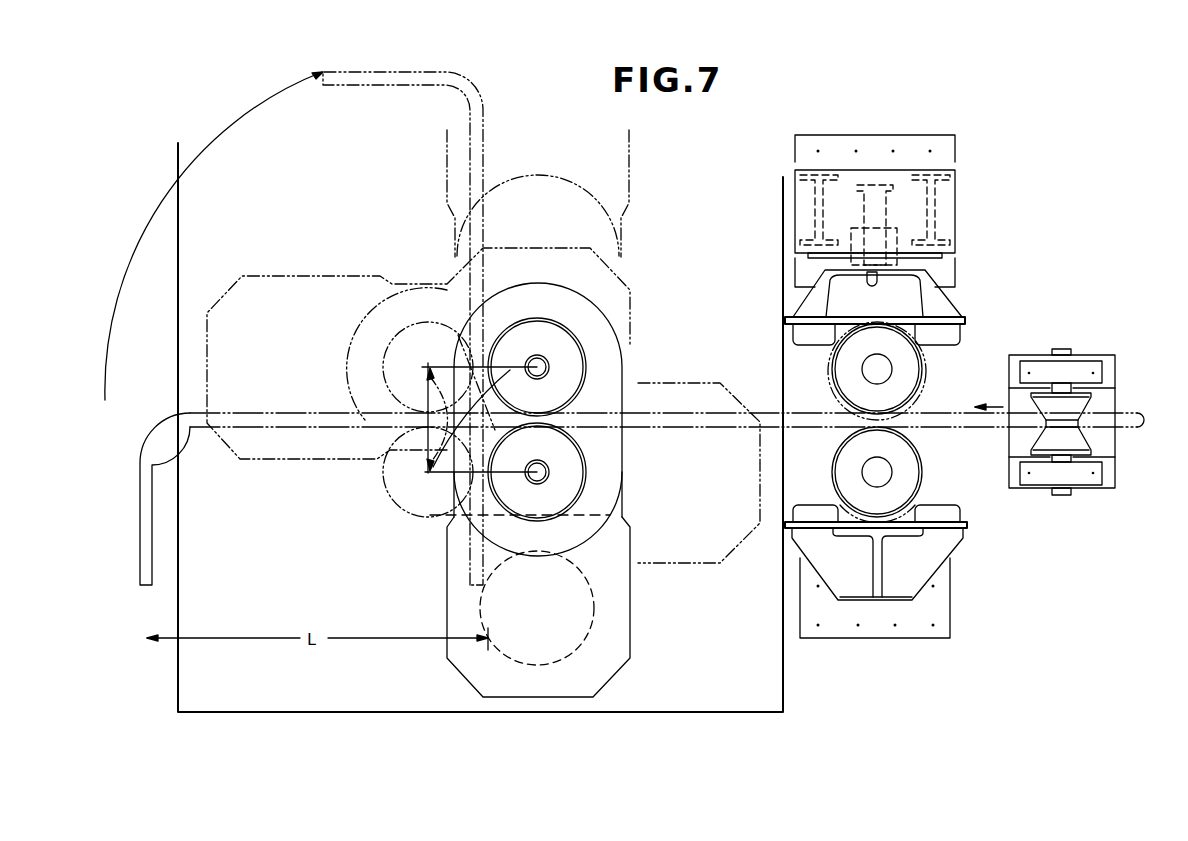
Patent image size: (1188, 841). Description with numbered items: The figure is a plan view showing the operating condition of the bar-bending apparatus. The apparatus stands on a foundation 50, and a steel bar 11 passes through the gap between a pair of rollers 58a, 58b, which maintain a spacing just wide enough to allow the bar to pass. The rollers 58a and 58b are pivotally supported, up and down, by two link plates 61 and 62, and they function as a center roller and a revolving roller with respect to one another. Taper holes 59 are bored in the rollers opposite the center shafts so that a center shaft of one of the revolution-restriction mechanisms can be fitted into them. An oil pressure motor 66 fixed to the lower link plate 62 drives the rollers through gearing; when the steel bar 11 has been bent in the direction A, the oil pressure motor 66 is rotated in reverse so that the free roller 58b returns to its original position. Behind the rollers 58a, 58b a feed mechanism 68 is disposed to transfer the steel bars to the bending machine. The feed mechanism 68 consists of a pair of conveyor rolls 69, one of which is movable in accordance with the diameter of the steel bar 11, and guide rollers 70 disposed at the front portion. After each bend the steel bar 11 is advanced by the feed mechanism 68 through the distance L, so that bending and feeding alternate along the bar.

The steel bar 11 is at (715, 425).
The foundation 50 is at (318, 712).
The roller 58a is at (585, 478).
The roller 58b is at (568, 330).
The taper hole 59 is at (548, 362).
The link plate 61 is at (622, 360).
The link plate 62 is at (617, 608).
The oil pressure motor 66 is at (594, 623).
The feed mechanism 68 is at (982, 472).
The conveyor roll 69 is at (922, 365).
The guide roller 70 is at (1090, 405).